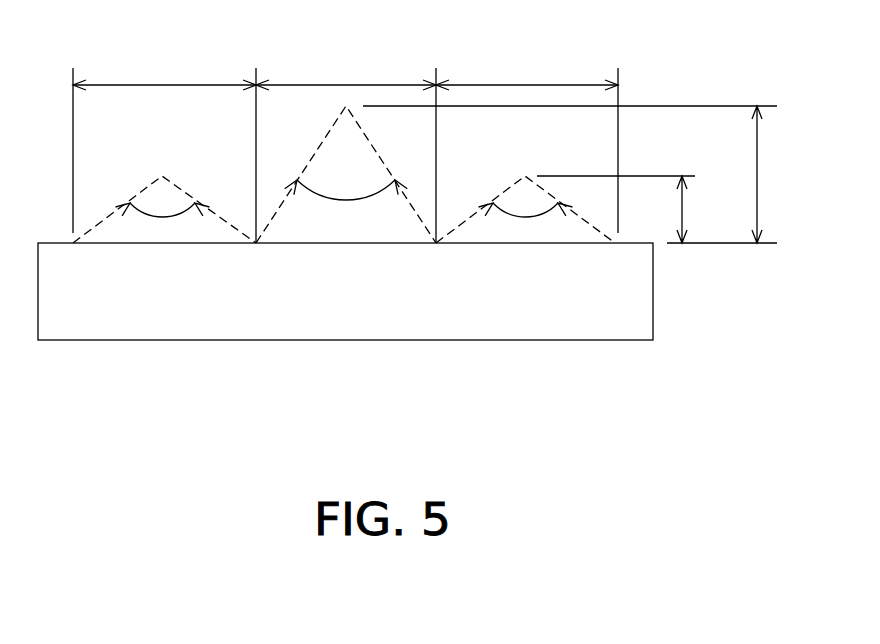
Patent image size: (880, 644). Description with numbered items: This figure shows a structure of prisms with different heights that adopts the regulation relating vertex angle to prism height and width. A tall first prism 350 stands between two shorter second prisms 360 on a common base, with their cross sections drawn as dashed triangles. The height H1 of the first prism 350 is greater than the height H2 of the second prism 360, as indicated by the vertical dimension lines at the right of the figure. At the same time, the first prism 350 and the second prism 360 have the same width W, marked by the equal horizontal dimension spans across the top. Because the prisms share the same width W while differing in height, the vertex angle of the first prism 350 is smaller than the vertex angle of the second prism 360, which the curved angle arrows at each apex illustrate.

The first prism 350 is at (393, 232).
The second prism 360 is at (203, 233).
The width W is at (345, 146).
The height of the first prism H1 is at (576, 174).
The height of the second prism H2 is at (627, 209).